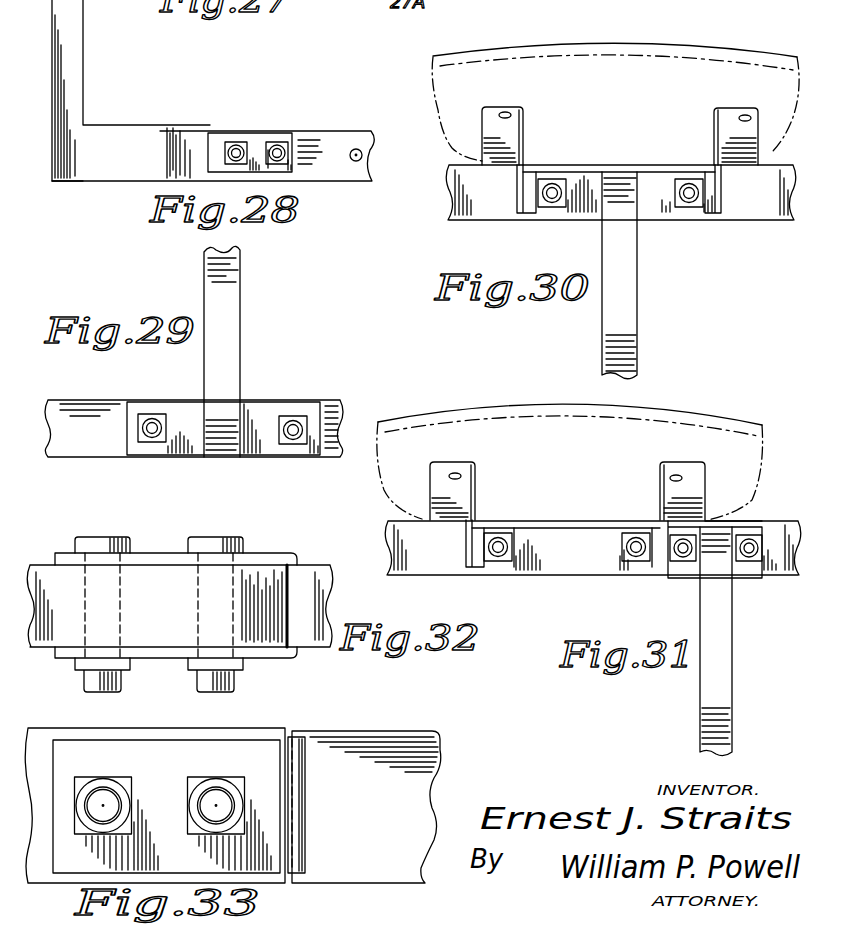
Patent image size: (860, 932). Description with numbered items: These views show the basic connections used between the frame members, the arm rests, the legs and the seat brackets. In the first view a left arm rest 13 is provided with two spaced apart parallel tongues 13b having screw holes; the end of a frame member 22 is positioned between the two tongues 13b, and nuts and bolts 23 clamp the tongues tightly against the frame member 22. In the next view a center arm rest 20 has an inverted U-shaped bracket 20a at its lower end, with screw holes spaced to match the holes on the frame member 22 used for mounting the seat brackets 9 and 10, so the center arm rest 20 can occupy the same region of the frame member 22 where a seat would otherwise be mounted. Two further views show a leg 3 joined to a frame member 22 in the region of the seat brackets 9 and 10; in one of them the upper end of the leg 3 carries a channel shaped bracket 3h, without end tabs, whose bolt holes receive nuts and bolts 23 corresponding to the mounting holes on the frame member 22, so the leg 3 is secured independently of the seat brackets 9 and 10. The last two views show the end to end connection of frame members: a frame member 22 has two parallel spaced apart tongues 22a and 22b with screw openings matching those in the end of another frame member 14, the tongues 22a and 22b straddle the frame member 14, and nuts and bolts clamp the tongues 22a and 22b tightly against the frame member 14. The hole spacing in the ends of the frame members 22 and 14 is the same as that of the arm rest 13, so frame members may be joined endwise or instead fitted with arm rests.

In FIG. 28, the left arm rest 13 is at (84, 80).
In FIG. 28, the tongues 13b is at (222, 128).
In FIG. 28, the frame member 22 is at (318, 143).
In FIG. 32, the frame member 22 is at (317, 582).
In FIG. 33, the frame member 22 is at (340, 742).
In FIG. 28, the nuts and bolts 23 is at (276, 162).
In FIG. 29, the center arm rest 20 is at (230, 318).
In FIG. 29, the inverted U-shaped bracket 20a is at (186, 415).
In FIG. 30, the seat bracket 10 is at (521, 110).
In FIG. 31, the seat bracket 10 is at (442, 476).
In FIG. 30, the seat bracket 9 is at (738, 106).
In FIG. 31, the seat bracket 9 is at (694, 470).
In FIG. 30, the leg 3 is at (638, 297).
In FIG. 31, the leg 3 is at (733, 652).
In FIG. 31, the channel shaped bracket 3h is at (754, 512).
In FIG. 32, the tongue 22b is at (160, 562).
In FIG. 33, the tongue 22b is at (160, 746).
In FIG. 32, the tongue 22a is at (153, 656).
In FIG. 33, the tongue 22a is at (205, 750).
In FIG. 32, the frame member 14 is at (254, 572).
In FIG. 33, the frame member 14 is at (283, 740).